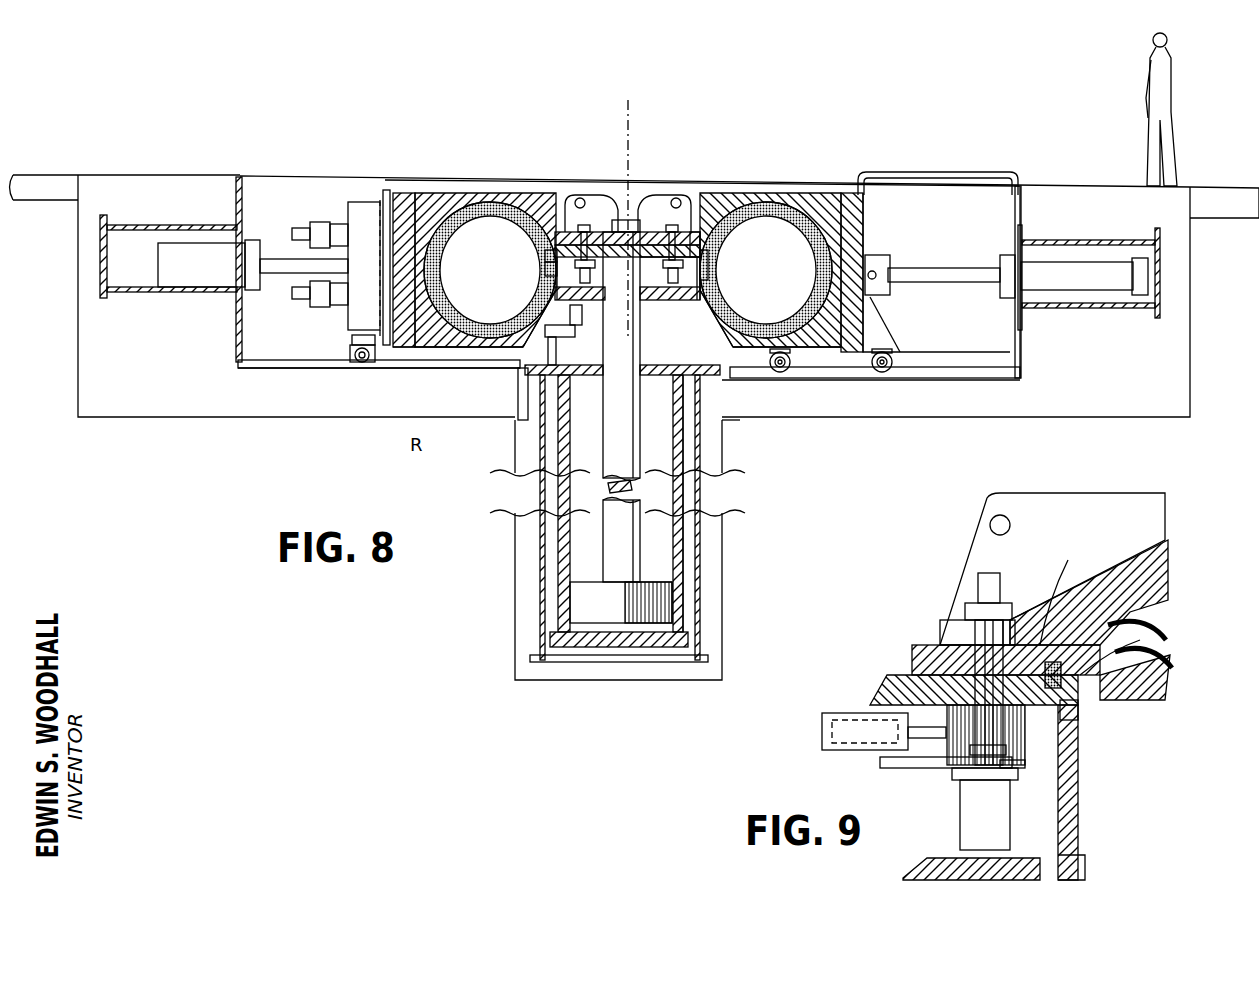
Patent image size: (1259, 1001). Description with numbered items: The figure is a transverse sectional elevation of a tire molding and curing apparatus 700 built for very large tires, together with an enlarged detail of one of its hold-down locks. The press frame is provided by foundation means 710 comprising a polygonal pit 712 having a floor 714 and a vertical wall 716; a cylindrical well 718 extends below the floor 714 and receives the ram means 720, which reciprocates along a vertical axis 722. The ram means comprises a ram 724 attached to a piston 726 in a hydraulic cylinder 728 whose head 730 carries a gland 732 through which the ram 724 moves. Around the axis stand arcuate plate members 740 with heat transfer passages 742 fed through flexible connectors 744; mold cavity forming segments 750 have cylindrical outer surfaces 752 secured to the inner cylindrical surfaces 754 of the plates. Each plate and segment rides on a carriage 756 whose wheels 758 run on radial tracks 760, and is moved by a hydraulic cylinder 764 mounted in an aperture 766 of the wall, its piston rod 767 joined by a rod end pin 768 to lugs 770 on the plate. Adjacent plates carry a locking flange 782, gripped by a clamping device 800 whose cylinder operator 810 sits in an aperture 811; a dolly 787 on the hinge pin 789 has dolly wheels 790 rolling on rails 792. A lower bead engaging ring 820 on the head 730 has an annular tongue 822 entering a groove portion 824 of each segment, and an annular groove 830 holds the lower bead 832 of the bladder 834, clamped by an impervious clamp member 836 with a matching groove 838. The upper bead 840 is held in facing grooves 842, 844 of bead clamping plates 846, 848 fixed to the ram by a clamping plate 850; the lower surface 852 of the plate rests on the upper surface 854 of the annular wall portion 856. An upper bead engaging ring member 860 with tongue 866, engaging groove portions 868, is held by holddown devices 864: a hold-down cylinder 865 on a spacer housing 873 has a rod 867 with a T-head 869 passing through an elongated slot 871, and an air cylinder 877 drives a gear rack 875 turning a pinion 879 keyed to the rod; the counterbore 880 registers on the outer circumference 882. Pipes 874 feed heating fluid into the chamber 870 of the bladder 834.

In FIG. 8, the apparatus 700 is at (468, 160).
In FIG. 8, the foundation means 710 is at (1165, 190).
In FIG. 8, the polygonal pit 712 is at (940, 225).
In FIG. 8, the floor 714 is at (955, 395).
In FIG. 8, the vertical wall 716 is at (258, 195).
In FIG. 8, the cylindrical well 718 is at (556, 569).
In FIG. 8, the ram means 720 is at (650, 492).
In FIG. 8, the vertical axis 722 is at (630, 115).
In FIG. 8, the ram 724 is at (608, 487).
In FIG. 8, the piston 726 is at (580, 603).
In FIG. 8, the hydraulic cylinder 728 is at (683, 568).
In FIG. 8, the head 730 is at (700, 385).
In FIG. 8, the gland 732 is at (640, 343).
In FIG. 8, the arcuate plate members 740 is at (858, 200).
In FIG. 8, the heat transfer passages 742 is at (866, 232).
In FIG. 8, the flexible connectors 744 is at (960, 176).
In FIG. 8, the mold cavity forming segments 750 is at (470, 195).
In FIG. 8, the cylindrical outer surfaces 752 is at (395, 195).
In FIG. 8, the inner cylindrical surfaces 754 is at (420, 198).
In FIG. 8, the carriage 756 is at (890, 327).
In FIG. 8, the wheels 758 is at (895, 355).
In FIG. 8, the tracks 760 is at (992, 376).
In FIG. 8, the hydraulic cylinders 764 is at (1138, 280).
In FIG. 8, the aperture 766 is at (1150, 242).
In FIG. 8, the piston rod 767 is at (958, 268).
In FIG. 8, the rod end pin 768 is at (874, 272).
In FIG. 8, the lugs 770 is at (886, 285).
In FIG. 8, the locking flange 782 is at (383, 193).
In FIG. 8, the dolly 787 is at (350, 354).
In FIG. 8, the hinge pin 789 is at (352, 340).
In FIG. 8, the dolly wheels 790 is at (412, 370).
In FIG. 8, the rails 792 is at (262, 372).
In FIG. 8, the clamping device 800 is at (340, 245).
In FIG. 8, the cylinder operator 810 is at (165, 266).
In FIG. 8, the aperture 811 is at (120, 240).
In FIG. 8, the bead engaging ring 820 is at (745, 352).
In FIG. 8, the annular tongue 822 is at (548, 352).
In FIG. 8, the annular groove portion 824 is at (470, 350).
In FIG. 8, the annular groove 830 is at (718, 320).
In FIG. 8, the lower bead 832 is at (708, 300).
In FIG. 8, the bladder 834 is at (442, 245).
In FIG. 9, the bladder 834 is at (1142, 678).
In FIG. 8, the clamp member 836 is at (702, 282).
In FIG. 9, the clamp member 836 is at (1078, 812).
In FIG. 8, the annular groove 838 is at (700, 290).
In FIG. 9, the annular groove 838 is at (1065, 872).
In FIG. 8, the upper bead 840 is at (547, 257).
In FIG. 9, the upper bead 840 is at (1090, 660).
In FIG. 8, the annular groove 842 is at (710, 255).
In FIG. 9, the annular groove 842 is at (1062, 690).
In FIG. 8, the annular groove 844 is at (694, 245).
In FIG. 9, the annular groove 844 is at (1070, 592).
In FIG. 8, the bead clamping plate 846 is at (658, 250).
In FIG. 9, the bead clamping plate 846 is at (895, 688).
In FIG. 8, the bead clamping plate 848 is at (645, 235).
In FIG. 9, the bead clamping plate 848 is at (915, 660).
In FIG. 8, the clamping plate 850 is at (614, 225).
In FIG. 9, the lower surface 852 is at (1005, 732).
In FIG. 9, the upper surface 854 is at (1062, 713).
In FIG. 8, the annular wall portion 856 is at (546, 270).
In FIG. 8, the upper bead engaging ring member 860 is at (690, 225).
In FIG. 9, the upper bead engaging ring member 860 is at (1168, 527).
In FIG. 8, the holddown devices 864 is at (545, 292).
In FIG. 9, the holddown devices 864 is at (1148, 501).
In FIG. 9, the hold-down cylinder 865 is at (972, 832).
In FIG. 8, the annular tongue 866 is at (715, 222).
In FIG. 9, the piston rod 867 is at (1010, 635).
In FIG. 8, the annular groove portions 868 is at (790, 205).
In FIG. 8, the T-head 869 is at (582, 226).
In FIG. 9, the T-head 869 is at (975, 580).
In FIG. 8, the chamber 870 is at (493, 279).
In FIG. 9, the elongated slot 871 is at (965, 635).
In FIG. 9, the spacer housing 873 is at (910, 768).
In FIG. 8, the pipes 874 is at (520, 375).
In FIG. 9, the gear rack 875 is at (1005, 748).
In FIG. 9, the air cylinder 877 is at (848, 752).
In FIG. 9, the pinion 879 is at (1025, 762).
In FIG. 9, the counterbore 880 is at (1160, 628).
In FIG. 9, the outer circumference 882 is at (1165, 650).